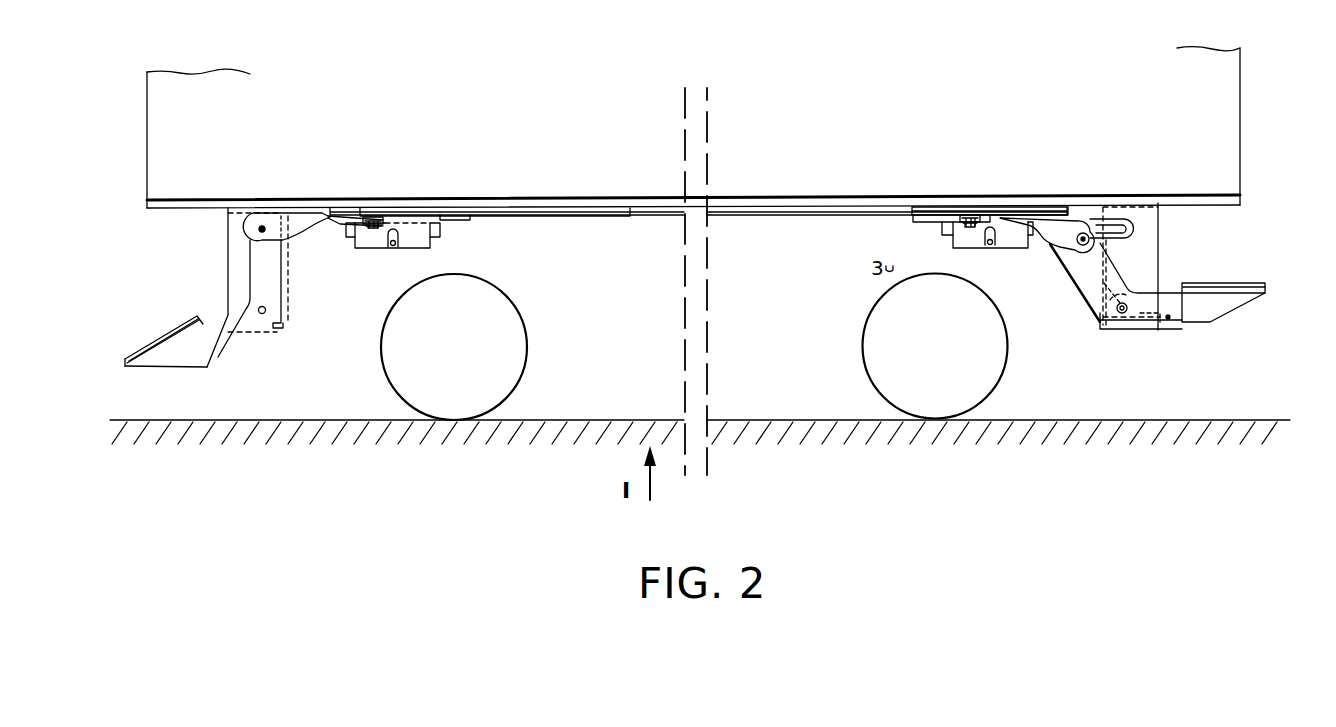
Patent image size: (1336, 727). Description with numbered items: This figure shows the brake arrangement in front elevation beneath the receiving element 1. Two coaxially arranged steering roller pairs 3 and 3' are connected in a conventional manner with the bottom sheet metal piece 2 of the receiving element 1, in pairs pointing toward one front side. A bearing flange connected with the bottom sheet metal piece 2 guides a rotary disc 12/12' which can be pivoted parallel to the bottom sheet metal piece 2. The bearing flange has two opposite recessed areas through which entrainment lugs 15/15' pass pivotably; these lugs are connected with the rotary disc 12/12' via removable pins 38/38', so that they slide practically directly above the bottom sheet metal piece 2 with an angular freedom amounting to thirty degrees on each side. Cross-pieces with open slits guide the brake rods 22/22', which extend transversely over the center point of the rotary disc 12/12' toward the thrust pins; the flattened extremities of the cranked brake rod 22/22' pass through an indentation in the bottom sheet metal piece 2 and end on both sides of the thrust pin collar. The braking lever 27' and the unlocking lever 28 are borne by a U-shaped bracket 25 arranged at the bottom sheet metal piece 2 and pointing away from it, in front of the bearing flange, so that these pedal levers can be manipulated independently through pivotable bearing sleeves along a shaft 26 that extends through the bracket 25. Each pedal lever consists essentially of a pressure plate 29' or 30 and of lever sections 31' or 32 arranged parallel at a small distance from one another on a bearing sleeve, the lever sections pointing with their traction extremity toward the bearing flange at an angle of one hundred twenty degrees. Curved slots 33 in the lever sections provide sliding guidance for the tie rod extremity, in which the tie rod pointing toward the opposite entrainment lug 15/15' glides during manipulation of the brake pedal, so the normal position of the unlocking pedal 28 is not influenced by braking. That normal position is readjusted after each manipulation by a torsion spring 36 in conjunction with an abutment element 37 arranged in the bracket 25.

The receiving element 1 is at (197, 140).
The bottom sheet metal piece 2 is at (745, 207).
The steering roller pair 3 is at (918, 377).
The steering roller pair 3' is at (458, 376).
The rotary disc 12 is at (989, 189).
The rotary disc 12' is at (495, 191).
The entrainment lug 15 is at (958, 192).
The entrainment lug 15' is at (372, 195).
The brake rod 22 is at (987, 252).
The brake rod 22' is at (393, 284).
The U-shaped bracket 25 is at (1147, 227).
The shaft 26 is at (1122, 313).
The braking lever 27' is at (166, 355).
The unlocking lever 28 is at (1215, 310).
The pressure plate 29' is at (163, 312).
The pressure plate 30 is at (1247, 283).
The lever section 31' is at (268, 301).
The lever section 32 is at (1152, 305).
The curved slot 33 is at (1113, 216).
The torsion spring 36 is at (1113, 329).
The abutment element 37 is at (1108, 273).
The removable pin 38 is at (940, 239).
The removable pin 38' is at (355, 246).